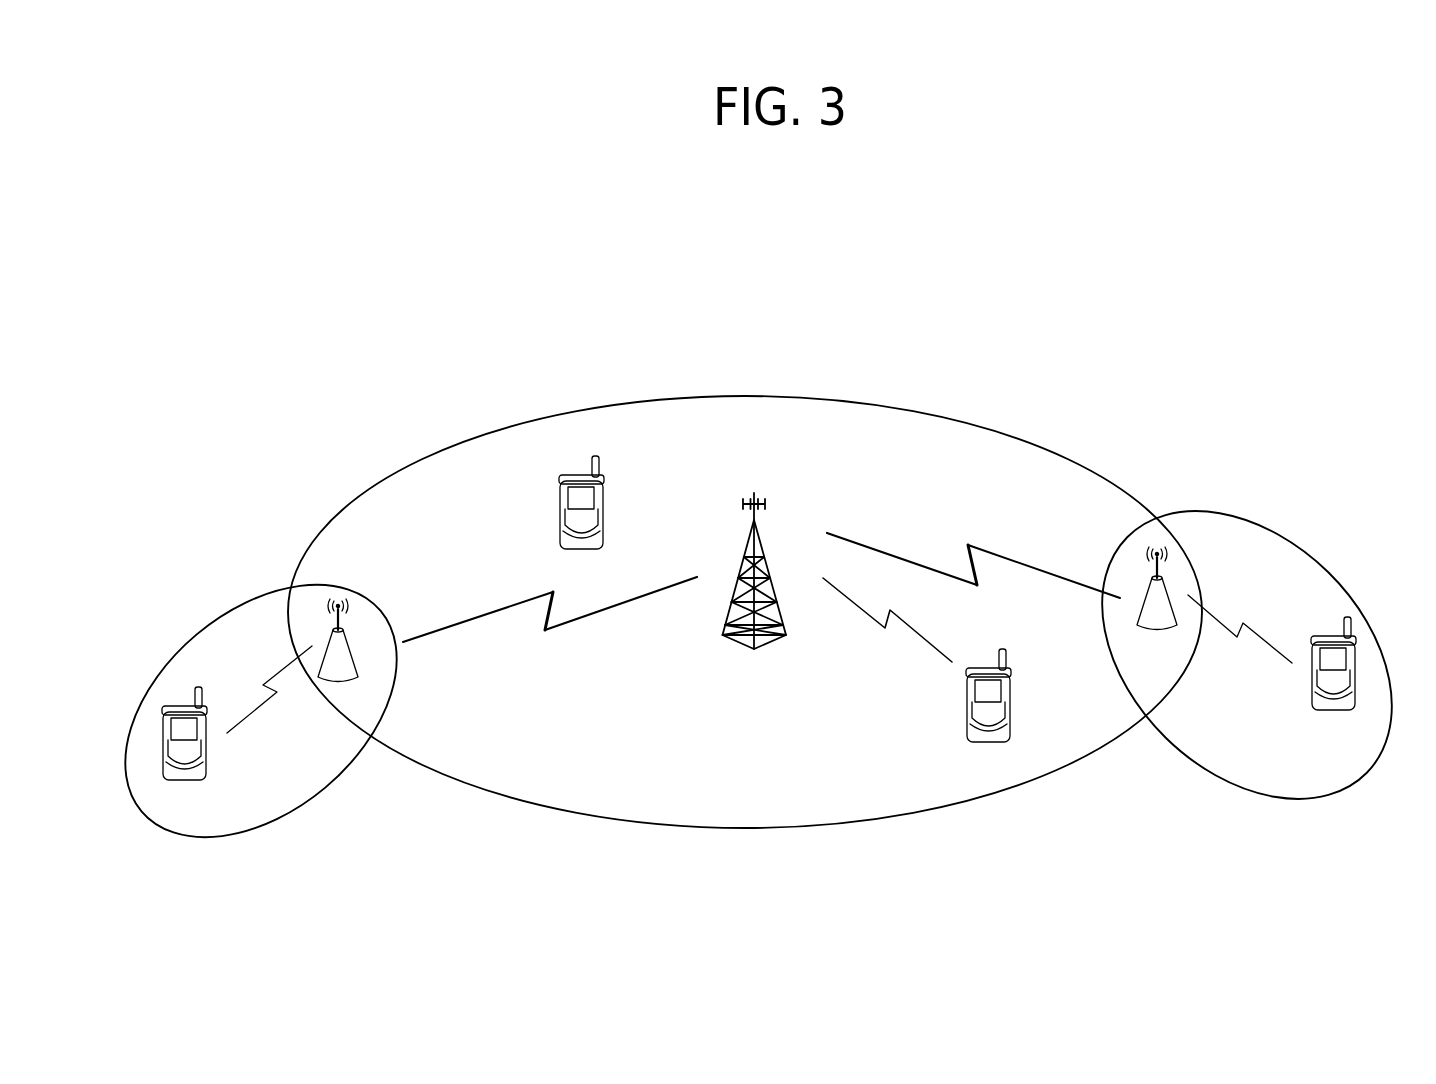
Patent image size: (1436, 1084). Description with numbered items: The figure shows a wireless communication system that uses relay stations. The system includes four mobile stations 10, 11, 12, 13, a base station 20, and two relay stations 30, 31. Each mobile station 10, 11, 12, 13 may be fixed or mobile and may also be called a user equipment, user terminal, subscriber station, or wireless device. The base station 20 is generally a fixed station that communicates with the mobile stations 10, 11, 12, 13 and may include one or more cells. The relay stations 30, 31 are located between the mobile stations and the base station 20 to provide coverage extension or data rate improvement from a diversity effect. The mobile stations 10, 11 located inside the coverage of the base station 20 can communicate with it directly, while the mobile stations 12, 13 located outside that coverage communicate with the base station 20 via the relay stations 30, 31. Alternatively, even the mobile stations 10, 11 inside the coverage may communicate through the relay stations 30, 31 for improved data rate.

The mobile station 10 is at (561, 511).
The mobile station 11 is at (1011, 694).
The mobile station 12 is at (206, 752).
The mobile station 13 is at (1312, 680).
The base station 20 is at (760, 536).
The relay station 30 is at (348, 640).
The relay station 31 is at (1165, 585).